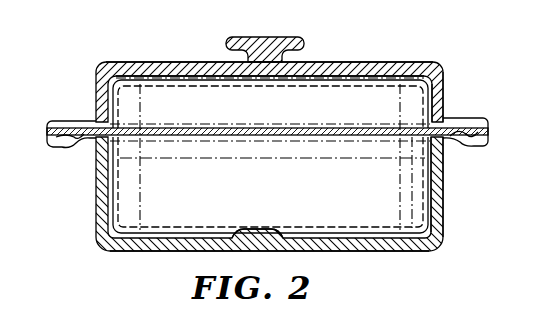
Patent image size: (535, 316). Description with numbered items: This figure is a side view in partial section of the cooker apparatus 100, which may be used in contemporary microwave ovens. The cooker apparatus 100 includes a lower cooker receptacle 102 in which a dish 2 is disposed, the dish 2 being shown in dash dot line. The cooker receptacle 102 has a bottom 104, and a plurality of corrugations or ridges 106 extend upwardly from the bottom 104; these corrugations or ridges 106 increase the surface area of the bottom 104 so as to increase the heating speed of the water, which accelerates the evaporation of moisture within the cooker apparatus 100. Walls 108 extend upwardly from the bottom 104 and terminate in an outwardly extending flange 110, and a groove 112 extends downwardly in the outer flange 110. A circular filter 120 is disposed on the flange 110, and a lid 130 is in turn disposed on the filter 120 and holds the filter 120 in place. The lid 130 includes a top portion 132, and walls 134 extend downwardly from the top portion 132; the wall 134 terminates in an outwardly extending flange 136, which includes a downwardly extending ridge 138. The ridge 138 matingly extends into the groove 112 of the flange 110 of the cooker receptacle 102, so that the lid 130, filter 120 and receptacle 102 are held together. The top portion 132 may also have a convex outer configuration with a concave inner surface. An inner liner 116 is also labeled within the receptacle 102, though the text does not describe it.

The cooker apparatus 100 is at (275, 155).
The lower cooker receptacle 102 is at (281, 179).
The bottom 104 is at (383, 253).
The corrugations or ridges 106 is at (257, 230).
The walls 108 is at (447, 227).
The outwardly extending flange 110 is at (473, 146).
The groove 112 is at (467, 132).
The inner tray 116 is at (100, 198).
The circular filter 120 is at (316, 112).
The lid 130 is at (261, 89).
The top portion 132 is at (390, 42).
The walls 134 is at (437, 92).
The outwardly extending flange 136 is at (80, 124).
The downwardly extending ridge 138 is at (79, 128).
The dish 2 is at (316, 158).